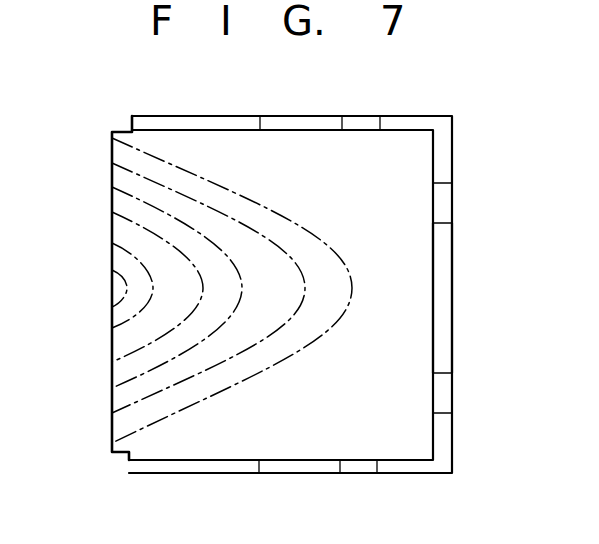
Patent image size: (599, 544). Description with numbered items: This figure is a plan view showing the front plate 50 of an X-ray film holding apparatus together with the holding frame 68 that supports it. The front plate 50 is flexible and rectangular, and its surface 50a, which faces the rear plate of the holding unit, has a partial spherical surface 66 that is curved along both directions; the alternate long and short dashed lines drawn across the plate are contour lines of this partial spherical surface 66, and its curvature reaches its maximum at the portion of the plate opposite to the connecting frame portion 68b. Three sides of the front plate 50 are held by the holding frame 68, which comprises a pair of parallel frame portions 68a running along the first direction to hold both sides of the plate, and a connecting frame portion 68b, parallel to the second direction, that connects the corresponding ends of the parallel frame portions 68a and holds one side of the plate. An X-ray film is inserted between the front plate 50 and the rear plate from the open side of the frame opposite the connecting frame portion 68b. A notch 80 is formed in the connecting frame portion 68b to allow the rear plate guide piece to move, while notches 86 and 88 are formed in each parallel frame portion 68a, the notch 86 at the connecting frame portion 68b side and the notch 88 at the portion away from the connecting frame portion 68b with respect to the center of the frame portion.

The front plate 50 is at (167, 446).
The surface 50a is at (223, 446).
The notch 88 is at (256, 124).
The notch 86 is at (360, 124).
The parallel frame portion 68a is at (410, 124).
The holding frame 68 is at (444, 332).
The connecting frame portion 68b is at (444, 268).
The notch 80 is at (443, 200).
The partial spherical surface 66 is at (111, 350).